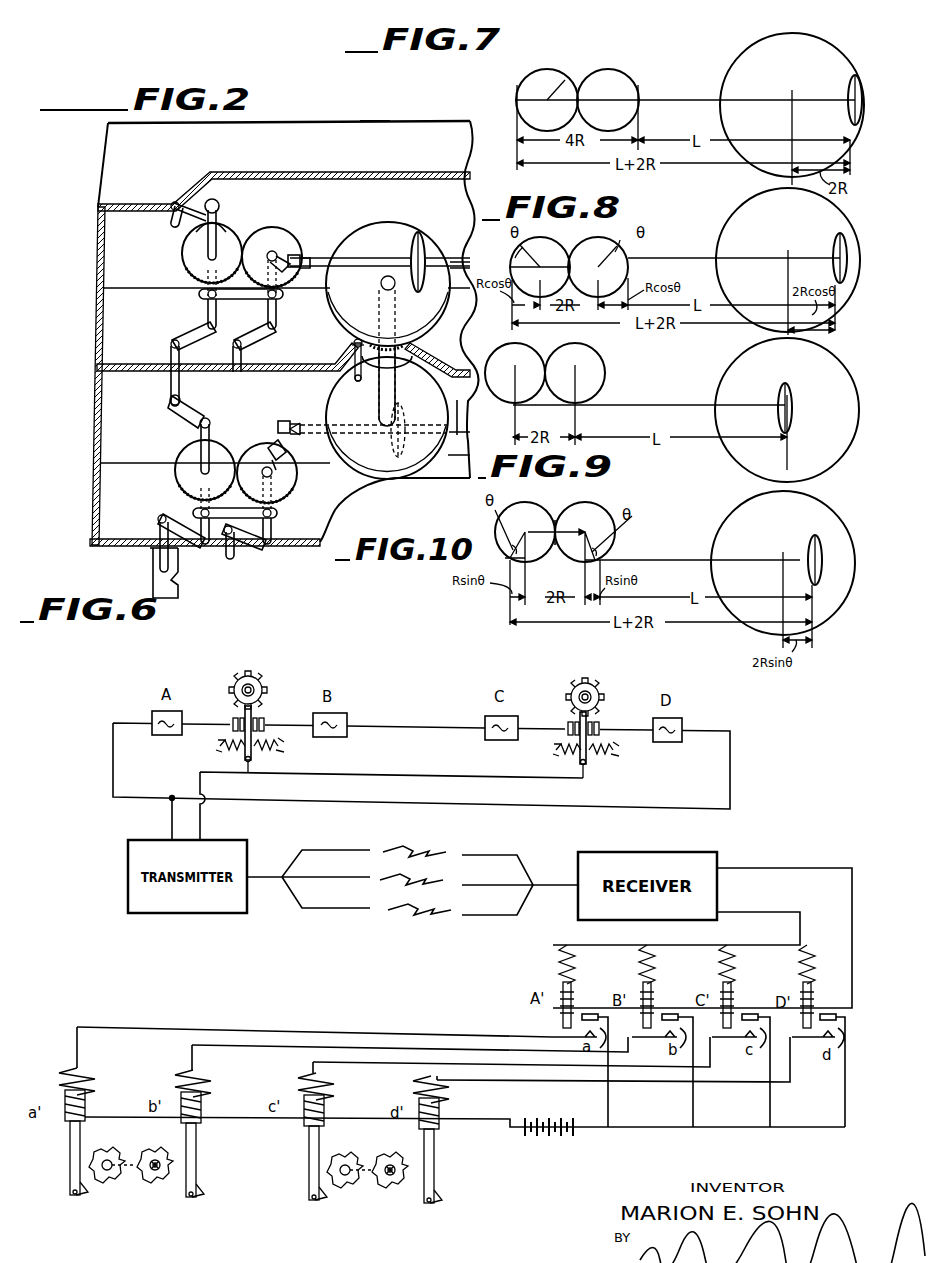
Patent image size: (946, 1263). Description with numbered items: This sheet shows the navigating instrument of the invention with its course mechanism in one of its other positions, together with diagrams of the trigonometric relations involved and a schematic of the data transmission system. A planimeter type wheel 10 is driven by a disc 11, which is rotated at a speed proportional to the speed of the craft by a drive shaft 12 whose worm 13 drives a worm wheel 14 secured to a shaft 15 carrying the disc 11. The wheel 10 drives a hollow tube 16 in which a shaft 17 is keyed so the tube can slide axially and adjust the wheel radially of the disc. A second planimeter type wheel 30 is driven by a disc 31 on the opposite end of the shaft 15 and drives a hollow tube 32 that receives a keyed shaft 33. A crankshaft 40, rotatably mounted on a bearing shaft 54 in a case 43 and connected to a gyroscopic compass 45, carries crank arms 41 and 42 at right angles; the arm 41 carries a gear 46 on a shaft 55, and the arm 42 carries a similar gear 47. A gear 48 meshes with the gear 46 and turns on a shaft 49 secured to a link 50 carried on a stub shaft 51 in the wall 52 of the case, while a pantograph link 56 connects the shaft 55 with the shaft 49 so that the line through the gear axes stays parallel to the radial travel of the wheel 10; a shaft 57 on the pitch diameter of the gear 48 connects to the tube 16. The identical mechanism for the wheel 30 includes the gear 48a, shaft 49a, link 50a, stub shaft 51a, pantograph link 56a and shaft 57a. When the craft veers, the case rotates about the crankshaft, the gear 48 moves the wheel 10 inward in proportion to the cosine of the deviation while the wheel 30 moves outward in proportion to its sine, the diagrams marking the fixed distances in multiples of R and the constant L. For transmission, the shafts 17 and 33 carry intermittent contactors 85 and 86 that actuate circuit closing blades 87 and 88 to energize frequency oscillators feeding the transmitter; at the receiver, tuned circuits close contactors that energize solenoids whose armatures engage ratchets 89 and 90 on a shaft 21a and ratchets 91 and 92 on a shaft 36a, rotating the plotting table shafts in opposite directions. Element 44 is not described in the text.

In FIG. 2, the planimeter type wheel 10 is at (421, 242).
In FIG. 7, the planimeter type wheel 10 is at (845, 96).
In FIG. 8, the planimeter type wheel 10 is at (836, 246).
In FIG. 2, the disc 11 is at (360, 232).
In FIG. 7, the disc 11 is at (748, 56).
In FIG. 8, the disc 11 is at (732, 222).
In FIG. 2, the drive shaft 12 is at (362, 378).
In FIG. 2, the worm 13 is at (352, 368).
In FIG. 2, the worm wheel 14 is at (395, 366).
In FIG. 2, the shaft 15 is at (378, 284).
In FIG. 2, the hollow tube 16 is at (385, 258).
In FIG. 7, the hollow tube 16 is at (694, 98).
In FIG. 8, the hollow tube 16 is at (696, 258).
In FIG. 2, the shaft 17 is at (458, 258).
In FIG. 6, the shaft 17 is at (254, 684).
In FIG. 2, the second planimeter type wheel 30 is at (404, 428).
In FIG. 9, the second planimeter type wheel 30 is at (797, 412).
In FIG. 10, the second planimeter type wheel 30 is at (814, 552).
In FIG. 2, the disc 31 is at (355, 460).
In FIG. 9, the disc 31 is at (735, 382).
In FIG. 10, the disc 31 is at (730, 526).
In FIG. 2, the hollow tube 32 is at (305, 424).
In FIG. 9, the hollow tube 32 is at (680, 408).
In FIG. 10, the hollow tube 32 is at (680, 565).
In FIG. 2, the shaft 33 is at (458, 400).
In FIG. 6, the shaft 33 is at (592, 694).
In FIG. 2, the crankshaft 40 is at (172, 395).
In FIG. 2, the crank arm 41 is at (222, 210).
In FIG. 2, the crank arm 42 is at (200, 412).
In FIG. 2, the case 43 is at (372, 120).
In FIG. 2, the lever 44 is at (158, 552).
In FIG. 2, the gyroscopic compass 45 is at (182, 590).
In FIG. 2, the gear 46 is at (184, 250).
In FIG. 7, the gear 46 is at (538, 74).
In FIG. 8, the gear 46 is at (510, 256).
In FIG. 2, the gear 47 is at (178, 456).
In FIG. 9, the gear 47 is at (512, 350).
In FIG. 10, the gear 47 is at (530, 504).
In FIG. 2, the gear 48 is at (290, 238).
In FIG. 7, the gear 48 is at (640, 92).
In FIG. 8, the gear 48 is at (608, 252).
In FIG. 2, the gear 48a is at (286, 488).
In FIG. 9, the gear 48a is at (590, 360).
In FIG. 10, the gear 48a is at (598, 510).
In FIG. 2, the shaft 49 is at (278, 314).
In FIG. 2, the shaft 49a is at (270, 545).
In FIG. 2, the link 50 is at (268, 337).
In FIG. 2, the link 50a is at (250, 545).
In FIG. 2, the stub shaft 51 is at (240, 370).
In FIG. 2, the stub shaft 51a is at (230, 555).
In FIG. 2, the wall 52 is at (284, 372).
In FIG. 2, the bearing shaft 54 is at (172, 205).
In FIG. 2, the shaft 55 is at (226, 232).
In FIG. 2, the pantograph link 56 is at (206, 295).
In FIG. 7, the pantograph link 56 is at (588, 84).
In FIG. 8, the pantograph link 56 is at (566, 262).
In FIG. 2, the pantograph link 56a is at (272, 518).
In FIG. 9, the pantograph link 56a is at (532, 385).
In FIG. 10, the pantograph link 56a is at (566, 525).
In FIG. 2, the shaft 57 is at (312, 270).
In FIG. 2, the shaft 57a is at (272, 440).
In FIG. 6, the intermittent contactor 85 is at (240, 670).
In FIG. 6, the intermittent contactor 86 is at (574, 680).
In FIG. 6, the circuit closing blade 87 is at (258, 724).
In FIG. 6, the circuit closing blade 88 is at (590, 729).
In FIG. 6, the ratchet 89 is at (110, 1185).
In FIG. 6, the ratchet 90 is at (160, 1185).
In FIG. 6, the shaft 21a is at (150, 1175).
In FIG. 6, the ratchet 91 is at (350, 1188).
In FIG. 6, the ratchet 92 is at (392, 1190).
In FIG. 6, the shaft 36a is at (385, 1180).